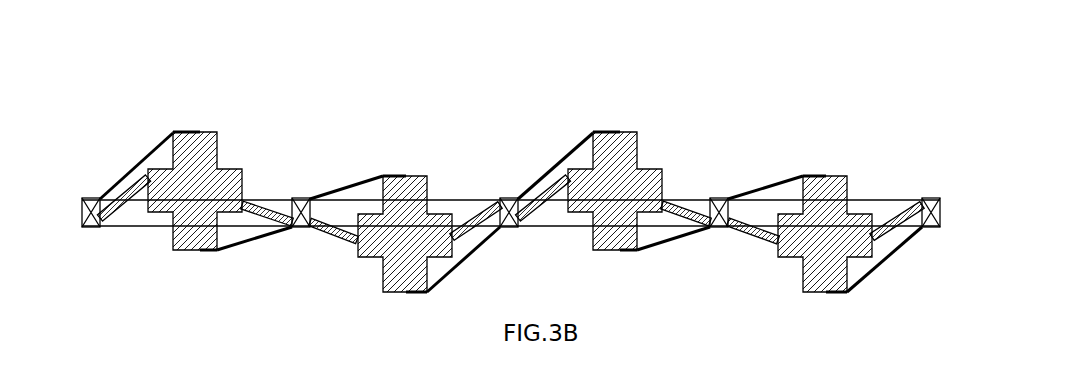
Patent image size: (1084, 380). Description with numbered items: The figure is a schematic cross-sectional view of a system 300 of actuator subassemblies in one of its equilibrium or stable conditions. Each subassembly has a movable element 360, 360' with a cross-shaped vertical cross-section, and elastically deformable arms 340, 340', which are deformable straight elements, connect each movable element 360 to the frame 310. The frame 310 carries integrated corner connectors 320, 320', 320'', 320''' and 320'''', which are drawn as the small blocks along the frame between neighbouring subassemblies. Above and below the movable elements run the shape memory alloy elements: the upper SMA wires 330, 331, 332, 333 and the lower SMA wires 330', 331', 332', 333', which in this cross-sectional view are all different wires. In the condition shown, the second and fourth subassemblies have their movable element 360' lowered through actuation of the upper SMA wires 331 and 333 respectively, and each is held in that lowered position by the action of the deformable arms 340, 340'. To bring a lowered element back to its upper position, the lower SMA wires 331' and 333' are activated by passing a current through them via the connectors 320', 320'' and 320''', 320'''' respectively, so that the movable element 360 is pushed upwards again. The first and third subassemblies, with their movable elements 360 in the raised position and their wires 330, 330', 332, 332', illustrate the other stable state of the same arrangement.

The system 300 is at (884, 166).
The frame 310 is at (462, 199).
The corner connector 320 is at (72, 181).
The corner connector 320' is at (290, 179).
The corner connector 320'' is at (507, 174).
The corner connector 320''' is at (710, 177).
The corner connector 320'''' is at (942, 184).
The SMA wire 330 is at (148, 142).
The SMA wire 330' is at (251, 258).
The SMA wire 331 is at (346, 159).
The SMA wire 331' is at (470, 259).
The SMA wire 332 is at (580, 141).
The SMA wire 332' is at (673, 259).
The SMA wire 333 is at (765, 161).
The SMA wire 333' is at (884, 265).
The elastically deformable arm 340 is at (121, 170).
The elastically deformable arm 340' is at (269, 235).
The movable element 360 is at (176, 205).
The movable element 360' is at (385, 236).